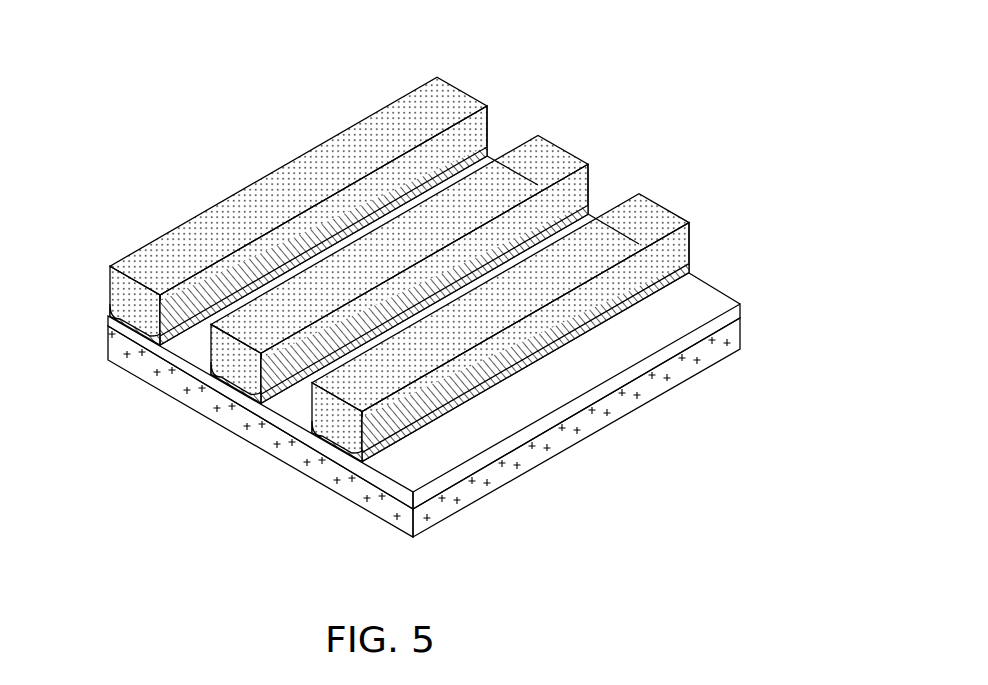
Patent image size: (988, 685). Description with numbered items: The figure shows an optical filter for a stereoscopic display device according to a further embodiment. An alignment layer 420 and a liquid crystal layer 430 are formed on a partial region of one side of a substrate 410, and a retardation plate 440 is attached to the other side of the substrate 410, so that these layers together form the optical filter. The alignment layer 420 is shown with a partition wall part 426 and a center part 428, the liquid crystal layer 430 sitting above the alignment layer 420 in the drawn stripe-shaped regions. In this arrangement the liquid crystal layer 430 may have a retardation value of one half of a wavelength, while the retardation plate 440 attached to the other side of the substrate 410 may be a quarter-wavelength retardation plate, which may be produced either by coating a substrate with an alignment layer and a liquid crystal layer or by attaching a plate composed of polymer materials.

The substrate 410 is at (735, 319).
The alignment layer 420 is at (306, 443).
The partition wall part 426 is at (345, 456).
The center part 428 is at (333, 441).
The liquid crystal layer 430 is at (465, 98).
The retardation plate 440 is at (668, 382).